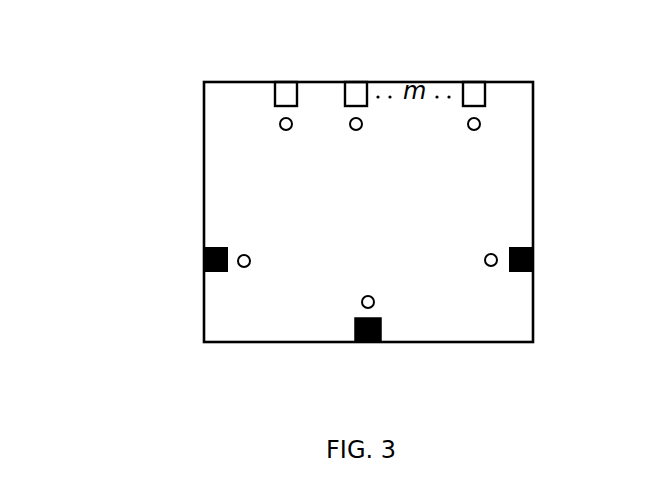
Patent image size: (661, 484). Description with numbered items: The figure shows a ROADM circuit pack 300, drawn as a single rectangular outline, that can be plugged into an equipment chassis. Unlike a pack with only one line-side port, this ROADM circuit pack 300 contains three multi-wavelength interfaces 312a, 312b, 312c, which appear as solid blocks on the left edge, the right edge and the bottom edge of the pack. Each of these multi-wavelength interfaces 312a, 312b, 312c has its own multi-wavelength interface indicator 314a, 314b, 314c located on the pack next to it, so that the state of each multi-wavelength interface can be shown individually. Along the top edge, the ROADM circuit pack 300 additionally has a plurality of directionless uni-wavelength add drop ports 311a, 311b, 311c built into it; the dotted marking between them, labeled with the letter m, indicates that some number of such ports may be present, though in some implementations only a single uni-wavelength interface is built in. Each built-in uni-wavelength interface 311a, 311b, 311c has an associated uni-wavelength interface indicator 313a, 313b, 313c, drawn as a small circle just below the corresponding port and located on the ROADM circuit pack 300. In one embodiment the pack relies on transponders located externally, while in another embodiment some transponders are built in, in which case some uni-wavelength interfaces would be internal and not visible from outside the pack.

The ROADM circuit pack 300 is at (63, 37).
The directionless uni-wavelength add drop port 311a is at (276, 82).
The directionless uni-wavelength add drop port 311b is at (361, 82).
The directionless uni-wavelength add drop port 311c is at (470, 82).
The multi-wavelength interface 312a is at (204, 247).
The multi-wavelength interface 312b is at (533, 245).
The multi-wavelength interface 312c is at (355, 343).
The uni-wavelength interface indicator 313a is at (283, 130).
The uni-wavelength interface indicator 313b is at (353, 130).
The uni-wavelength interface indicator 313c is at (471, 130).
The multi-wavelength interface indicator 314a is at (248, 266).
The multi-wavelength interface indicator 314b is at (487, 255).
The multi-wavelength interface indicator 314c is at (375, 302).